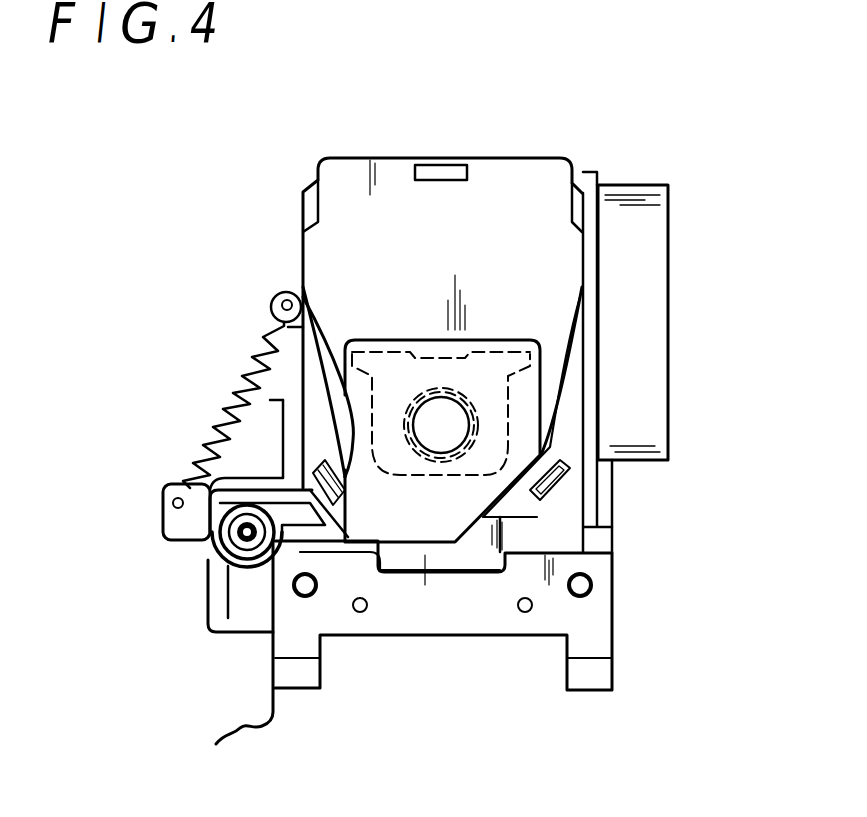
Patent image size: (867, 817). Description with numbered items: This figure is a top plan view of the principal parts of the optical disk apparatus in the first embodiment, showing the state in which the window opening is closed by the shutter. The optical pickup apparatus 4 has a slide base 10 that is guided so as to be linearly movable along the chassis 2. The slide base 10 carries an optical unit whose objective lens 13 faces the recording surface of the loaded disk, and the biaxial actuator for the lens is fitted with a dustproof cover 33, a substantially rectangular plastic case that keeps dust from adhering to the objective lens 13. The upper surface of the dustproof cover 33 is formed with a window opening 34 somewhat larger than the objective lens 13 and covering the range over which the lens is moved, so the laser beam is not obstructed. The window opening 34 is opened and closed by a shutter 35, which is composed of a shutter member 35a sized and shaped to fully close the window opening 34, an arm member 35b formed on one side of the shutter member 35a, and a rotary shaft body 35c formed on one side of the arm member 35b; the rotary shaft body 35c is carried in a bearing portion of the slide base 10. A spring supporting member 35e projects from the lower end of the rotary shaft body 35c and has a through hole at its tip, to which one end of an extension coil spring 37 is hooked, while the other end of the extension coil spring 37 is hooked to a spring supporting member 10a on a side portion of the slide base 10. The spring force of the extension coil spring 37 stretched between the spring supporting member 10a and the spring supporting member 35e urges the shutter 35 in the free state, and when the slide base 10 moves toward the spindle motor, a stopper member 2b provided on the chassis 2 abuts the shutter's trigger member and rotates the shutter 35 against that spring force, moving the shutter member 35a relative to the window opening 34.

The chassis 2 is at (248, 733).
The stopper member 2b is at (213, 597).
The optical pickup apparatus 4 is at (331, 151).
The slide base 10 is at (593, 620).
The spring supporting member 10a is at (278, 292).
The objective lens 13 is at (478, 424).
The dustproof cover 33 is at (487, 200).
The window opening 34 is at (470, 472).
The shutter 35 is at (347, 561).
The shutter member 35a is at (428, 518).
The arm member 35b is at (327, 560).
The rotary shaft body 35c is at (215, 548).
The spring supporting member 35e is at (165, 518).
The extension coil spring 37 is at (237, 392).